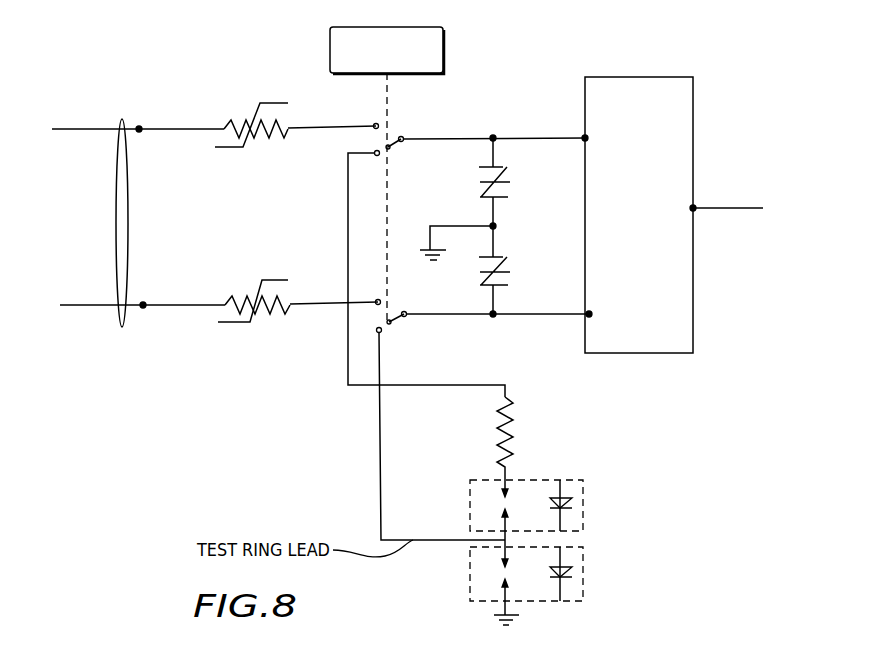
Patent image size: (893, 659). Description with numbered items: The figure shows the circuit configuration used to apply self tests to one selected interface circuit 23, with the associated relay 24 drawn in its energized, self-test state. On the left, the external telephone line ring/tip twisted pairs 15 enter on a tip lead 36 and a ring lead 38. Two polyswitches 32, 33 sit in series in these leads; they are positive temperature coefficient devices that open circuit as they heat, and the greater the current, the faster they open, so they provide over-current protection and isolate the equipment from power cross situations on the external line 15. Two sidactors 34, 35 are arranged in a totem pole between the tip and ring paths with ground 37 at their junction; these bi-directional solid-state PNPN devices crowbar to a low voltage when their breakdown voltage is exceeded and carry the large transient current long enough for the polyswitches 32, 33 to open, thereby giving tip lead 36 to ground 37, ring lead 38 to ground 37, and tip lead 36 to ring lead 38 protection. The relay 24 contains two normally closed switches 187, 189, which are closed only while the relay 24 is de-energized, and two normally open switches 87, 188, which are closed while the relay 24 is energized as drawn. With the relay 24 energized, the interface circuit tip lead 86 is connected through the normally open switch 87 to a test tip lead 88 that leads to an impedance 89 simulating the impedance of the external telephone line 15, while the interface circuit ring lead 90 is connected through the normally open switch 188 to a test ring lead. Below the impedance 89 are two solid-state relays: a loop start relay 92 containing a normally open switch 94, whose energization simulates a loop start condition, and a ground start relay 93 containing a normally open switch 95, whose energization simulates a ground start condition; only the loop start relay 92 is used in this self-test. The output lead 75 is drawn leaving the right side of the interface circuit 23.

The telephone line ring/tip twisted pairs 15 is at (121, 120).
The interface circuit 23 is at (642, 77).
The relay 24 is at (330, 52).
The polyswitch 32 is at (257, 137).
The polyswitch 33 is at (262, 320).
The sidactor 34 is at (500, 166).
The sidactor 35 is at (500, 256).
The tip lead 36 is at (183, 128).
The ground 37 is at (490, 222).
The ring lead 38 is at (192, 304).
The output lead 75 is at (735, 207).
The interface circuit tip lead 86 is at (540, 138).
The normally open switch 87 is at (383, 150).
The test tip lead 88 is at (425, 385).
The impedance 89 is at (511, 427).
The interface circuit ring lead 90 is at (576, 315).
The loop start relay 92 is at (583, 508).
The ground start relay 93 is at (583, 580).
The normally open switch 94 is at (500, 502).
The normally open switch 95 is at (500, 575).
The normally closed switch 187 is at (385, 133).
The normally open switch 188 is at (388, 326).
The normally closed switch 189 is at (382, 310).